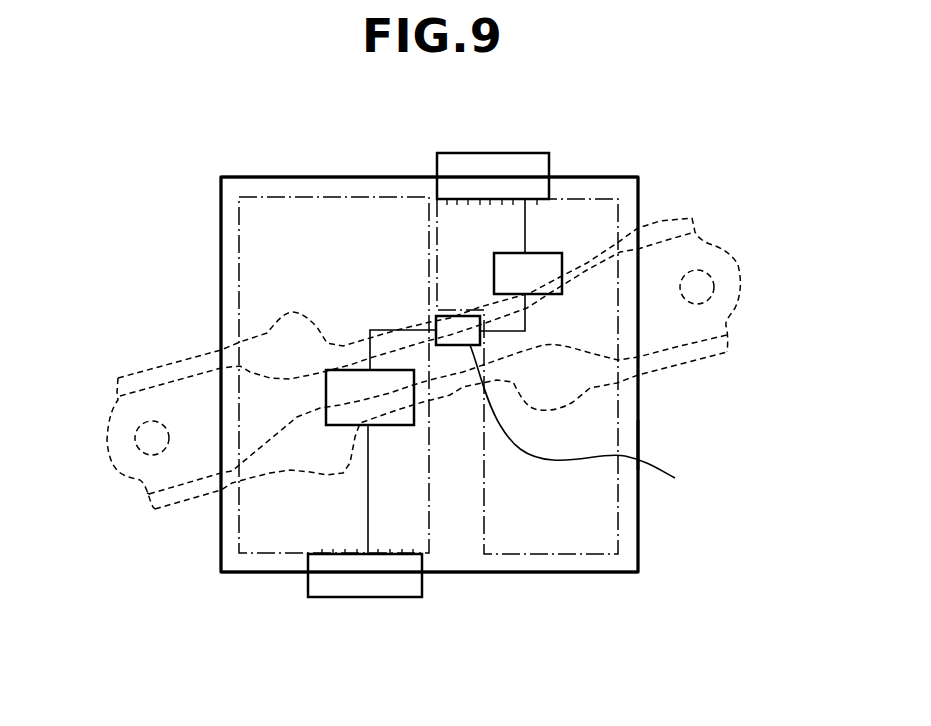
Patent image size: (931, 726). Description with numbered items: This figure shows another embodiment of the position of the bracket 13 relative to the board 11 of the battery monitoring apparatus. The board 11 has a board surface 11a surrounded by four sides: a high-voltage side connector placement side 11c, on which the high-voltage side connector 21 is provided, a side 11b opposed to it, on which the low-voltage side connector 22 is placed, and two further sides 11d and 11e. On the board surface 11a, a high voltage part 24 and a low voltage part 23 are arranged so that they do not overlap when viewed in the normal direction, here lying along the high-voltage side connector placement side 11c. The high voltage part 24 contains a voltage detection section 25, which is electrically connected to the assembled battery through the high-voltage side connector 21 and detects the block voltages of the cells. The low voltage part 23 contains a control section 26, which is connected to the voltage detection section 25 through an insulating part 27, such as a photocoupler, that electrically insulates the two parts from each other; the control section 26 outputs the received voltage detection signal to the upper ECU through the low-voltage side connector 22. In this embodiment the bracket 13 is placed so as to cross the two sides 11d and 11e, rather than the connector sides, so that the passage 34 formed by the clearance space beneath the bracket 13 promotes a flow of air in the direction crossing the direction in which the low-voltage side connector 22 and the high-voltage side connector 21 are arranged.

The board 11 is at (638, 412).
The board surface 11a is at (628, 444).
The side opposed to the high-voltage side connector placement side 11b is at (592, 177).
The high-voltage side connector placement side 11c is at (233, 572).
The side 11d is at (638, 556).
The side 11e is at (220, 540).
The bracket 13 is at (740, 262).
The high-voltage side connector 21 is at (327, 597).
The low-voltage side connector 22 is at (492, 153).
The low voltage part 23 is at (618, 527).
The high voltage part 24 is at (239, 303).
The voltage detection section 25 is at (391, 425).
The control section 26 is at (562, 274).
The insulating part 27 is at (660, 470).
The passage 34 is at (462, 347).